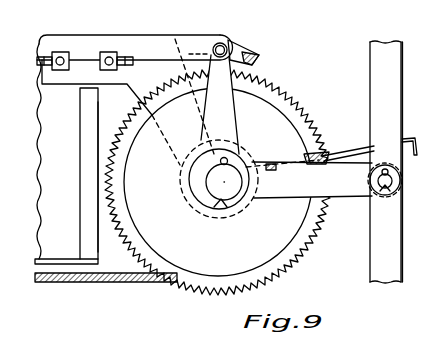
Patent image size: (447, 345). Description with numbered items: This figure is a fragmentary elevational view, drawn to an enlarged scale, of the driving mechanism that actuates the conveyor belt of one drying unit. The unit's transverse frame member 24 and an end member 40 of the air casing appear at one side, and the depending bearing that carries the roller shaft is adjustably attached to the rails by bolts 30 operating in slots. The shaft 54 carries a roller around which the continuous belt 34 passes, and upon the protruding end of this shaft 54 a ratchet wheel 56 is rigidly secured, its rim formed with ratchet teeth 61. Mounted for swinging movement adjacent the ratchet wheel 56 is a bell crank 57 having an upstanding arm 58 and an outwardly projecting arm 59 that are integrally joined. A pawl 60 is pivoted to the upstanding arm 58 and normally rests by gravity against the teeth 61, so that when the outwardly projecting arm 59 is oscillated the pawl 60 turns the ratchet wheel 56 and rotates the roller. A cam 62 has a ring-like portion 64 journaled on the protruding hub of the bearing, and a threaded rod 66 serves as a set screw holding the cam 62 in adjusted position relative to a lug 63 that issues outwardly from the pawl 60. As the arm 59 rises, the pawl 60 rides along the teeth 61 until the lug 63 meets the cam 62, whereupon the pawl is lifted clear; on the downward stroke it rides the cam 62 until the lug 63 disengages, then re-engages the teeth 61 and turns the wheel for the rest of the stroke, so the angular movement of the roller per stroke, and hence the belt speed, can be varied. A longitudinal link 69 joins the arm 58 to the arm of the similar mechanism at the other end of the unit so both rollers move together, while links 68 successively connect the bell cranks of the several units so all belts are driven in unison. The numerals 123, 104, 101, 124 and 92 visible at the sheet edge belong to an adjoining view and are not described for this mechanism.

The longitudinal link 69 is at (88, 38).
The cam 62 is at (176, 45).
The pawl 60 is at (240, 43).
The lug 63 is at (245, 55).
The links 68 is at (373, 65).
The upstanding arm 58 is at (232, 107).
The bell crank 57 is at (232, 157).
The bolts 30 is at (100, 65).
The frame member 24 is at (80, 123).
The end member 40 is at (97, 190).
The ratchet teeth 61 is at (115, 223).
The continuous belt 34 is at (127, 278).
The shaft 54 is at (214, 186).
The ring-like portion 64 is at (238, 210).
The outwardly projecting arm 59 is at (340, 182).
The ratchet wheel 56 is at (268, 233).
The threaded rod 66 is at (415, 153).
The numeral of adjacent figure 123 is at (35, 343).
The numeral of adjacent figure 104 is at (76, 336).
The numeral of adjacent figure 101 is at (200, 340).
The numeral of adjacent figure 124 is at (391, 336).
The numeral of adjacent figure 92 is at (435, 336).